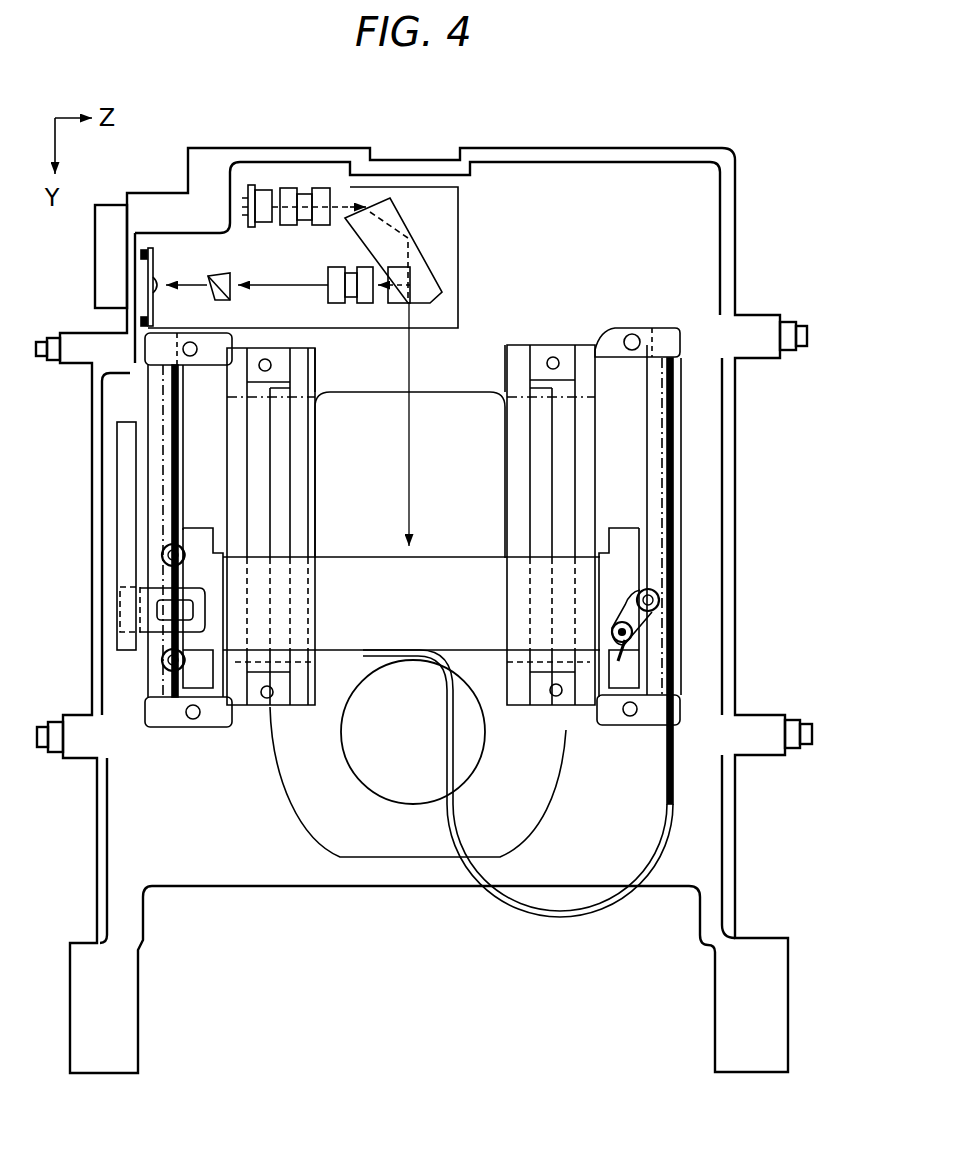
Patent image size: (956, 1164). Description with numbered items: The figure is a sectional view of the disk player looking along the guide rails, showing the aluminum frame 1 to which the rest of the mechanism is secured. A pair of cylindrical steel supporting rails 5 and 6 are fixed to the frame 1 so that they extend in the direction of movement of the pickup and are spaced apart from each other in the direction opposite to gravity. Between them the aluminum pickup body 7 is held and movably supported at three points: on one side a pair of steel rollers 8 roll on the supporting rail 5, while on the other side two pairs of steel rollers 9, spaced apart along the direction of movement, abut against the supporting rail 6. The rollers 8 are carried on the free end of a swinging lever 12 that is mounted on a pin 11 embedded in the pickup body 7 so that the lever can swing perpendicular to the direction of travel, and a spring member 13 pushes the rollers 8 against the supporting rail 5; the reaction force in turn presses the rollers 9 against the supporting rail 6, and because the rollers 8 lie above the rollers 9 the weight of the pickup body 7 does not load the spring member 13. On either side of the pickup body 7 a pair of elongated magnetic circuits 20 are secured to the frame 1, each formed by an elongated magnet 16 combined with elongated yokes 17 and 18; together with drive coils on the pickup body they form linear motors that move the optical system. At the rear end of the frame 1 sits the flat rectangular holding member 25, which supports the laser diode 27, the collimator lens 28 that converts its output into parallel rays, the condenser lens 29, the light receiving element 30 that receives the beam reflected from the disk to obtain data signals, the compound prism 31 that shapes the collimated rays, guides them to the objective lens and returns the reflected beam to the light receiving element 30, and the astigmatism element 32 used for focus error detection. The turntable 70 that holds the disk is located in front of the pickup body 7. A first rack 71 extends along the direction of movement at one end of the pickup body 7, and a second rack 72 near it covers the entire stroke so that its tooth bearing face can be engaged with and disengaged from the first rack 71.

The frame 1 is at (743, 261).
The supporting rail 5 is at (663, 435).
The supporting rail 6 is at (158, 408).
The pickup body 7 is at (466, 555).
The rollers 8 is at (659, 600).
The rollers 9 is at (162, 555).
The pin 11 is at (632, 638).
The swinging lever 12 is at (640, 624).
The spring member 13 is at (627, 660).
The elongated magnet 16 is at (253, 462).
The elongated yoke 17 is at (235, 432).
The elongated yoke 18 is at (306, 449).
The magnetic circuits 20 is at (220, 405).
The holding member 25 is at (464, 253).
The laser diode 27 is at (265, 190).
The collimator lens 28 is at (310, 192).
The condenser lens 29 is at (353, 303).
The light receiving element 30 is at (152, 278).
The compound prism 31 is at (415, 235).
The astigmatism element 32 is at (232, 276).
The turntable 70 is at (343, 761).
The first rack 71 is at (140, 605).
The second rack 72 is at (120, 522).